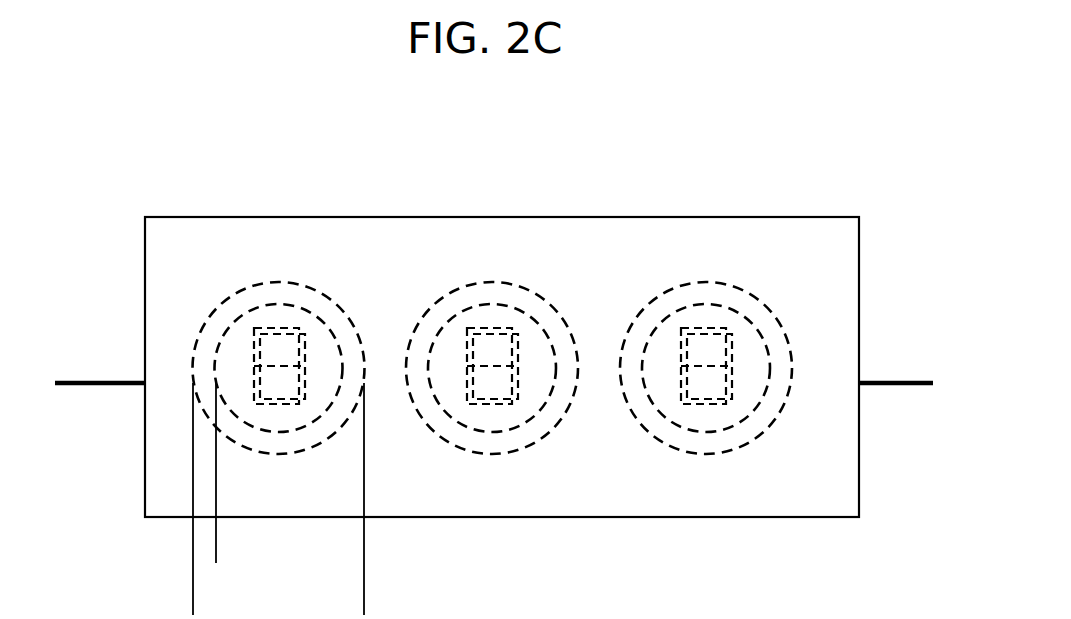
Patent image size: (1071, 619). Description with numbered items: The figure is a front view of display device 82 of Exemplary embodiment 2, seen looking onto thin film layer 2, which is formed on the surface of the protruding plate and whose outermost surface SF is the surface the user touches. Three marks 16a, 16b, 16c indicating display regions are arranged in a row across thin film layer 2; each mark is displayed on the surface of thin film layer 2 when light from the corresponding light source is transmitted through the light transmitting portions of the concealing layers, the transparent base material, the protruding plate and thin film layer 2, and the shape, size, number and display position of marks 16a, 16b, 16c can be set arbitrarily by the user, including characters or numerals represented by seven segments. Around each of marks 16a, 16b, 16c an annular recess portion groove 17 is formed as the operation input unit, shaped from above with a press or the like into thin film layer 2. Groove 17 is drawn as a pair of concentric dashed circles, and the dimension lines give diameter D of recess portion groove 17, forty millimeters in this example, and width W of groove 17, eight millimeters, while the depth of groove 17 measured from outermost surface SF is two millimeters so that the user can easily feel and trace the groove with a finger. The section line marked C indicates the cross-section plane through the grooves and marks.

The thin film layer 2 is at (833, 286).
The mark 16a is at (256, 330).
The mark 16b is at (470, 330).
The mark 16c is at (684, 330).
The annular recess portion groove 17 is at (284, 296).
The display device 82 is at (121, 473).
The outermost surface SF is at (793, 495).
The section line C- C is at (79, 430).
The width W is at (152, 552).
The diameter D is at (354, 603).